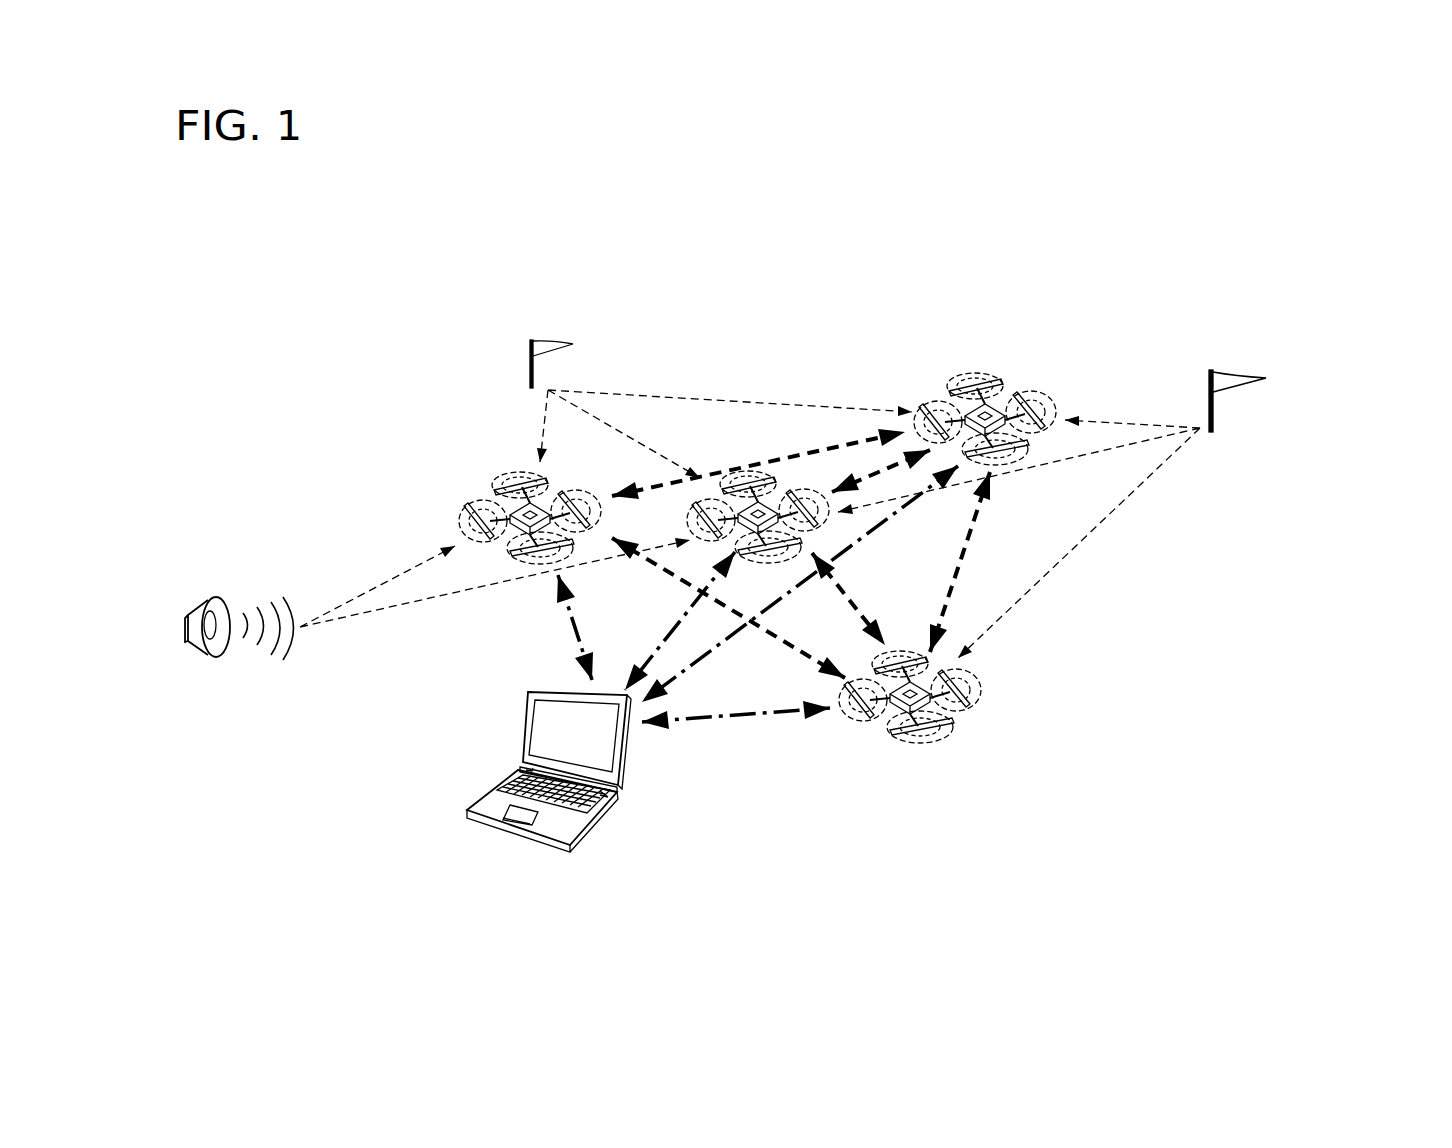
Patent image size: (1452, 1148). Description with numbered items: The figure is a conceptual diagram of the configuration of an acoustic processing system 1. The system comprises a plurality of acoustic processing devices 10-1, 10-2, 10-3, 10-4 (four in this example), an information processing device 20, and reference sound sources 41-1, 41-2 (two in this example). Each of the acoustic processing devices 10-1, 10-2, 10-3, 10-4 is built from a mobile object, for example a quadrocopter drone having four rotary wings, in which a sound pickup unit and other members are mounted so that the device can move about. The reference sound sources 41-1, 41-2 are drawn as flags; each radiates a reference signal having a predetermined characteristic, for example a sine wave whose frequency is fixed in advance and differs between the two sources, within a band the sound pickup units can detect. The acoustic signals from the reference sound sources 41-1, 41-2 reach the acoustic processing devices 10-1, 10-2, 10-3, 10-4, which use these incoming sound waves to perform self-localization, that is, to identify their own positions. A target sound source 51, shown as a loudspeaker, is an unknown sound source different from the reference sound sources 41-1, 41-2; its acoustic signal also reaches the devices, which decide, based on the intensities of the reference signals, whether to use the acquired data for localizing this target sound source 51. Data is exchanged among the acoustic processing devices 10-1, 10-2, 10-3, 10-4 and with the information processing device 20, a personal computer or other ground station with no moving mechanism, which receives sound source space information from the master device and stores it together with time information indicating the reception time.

The acoustic processing system 1 is at (262, 278).
The acoustic processing device 10-1 is at (915, 752).
The acoustic processing device 10-2 is at (980, 376).
The acoustic processing device 10-3 is at (757, 466).
The acoustic processing device 10-4 is at (525, 470).
The information processing device 20 is at (545, 850).
The reference sound source 41-1 is at (1211, 370).
The reference sound source 41-2 is at (532, 338).
The target sound source 51 is at (200, 605).